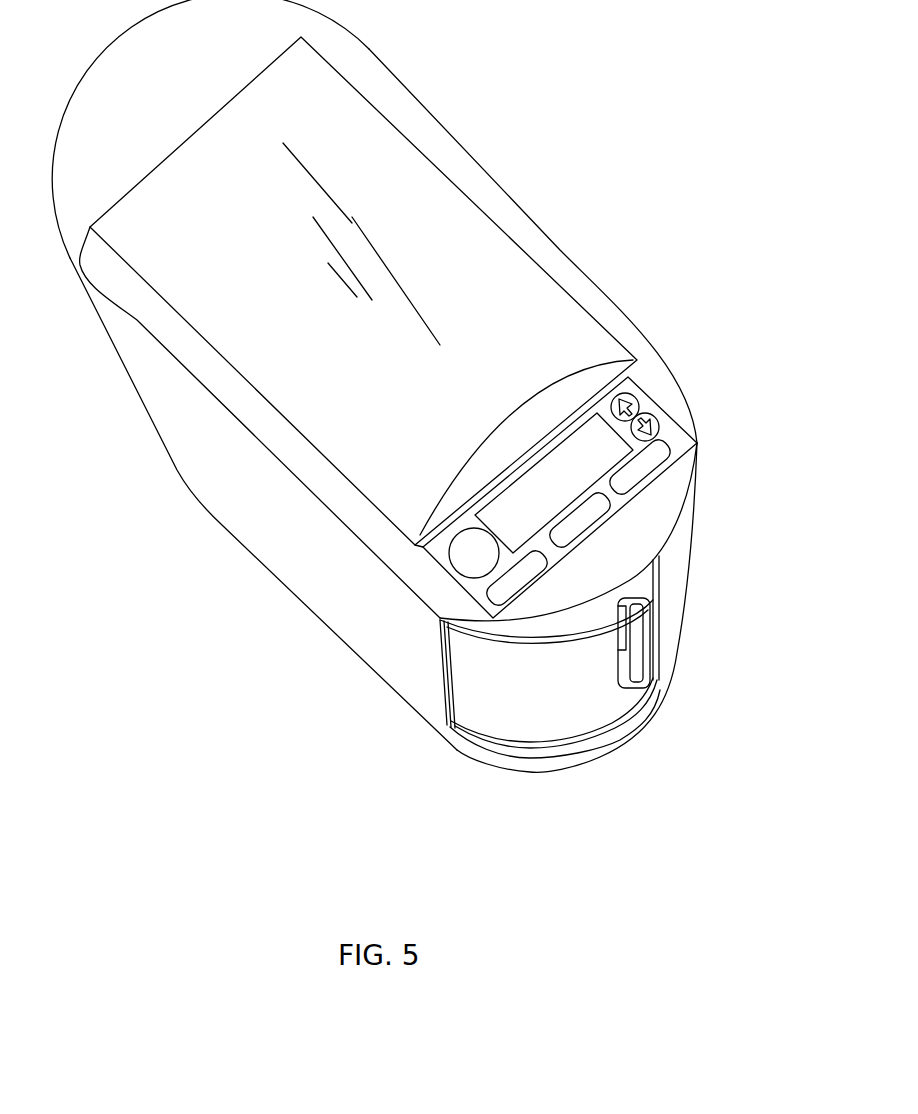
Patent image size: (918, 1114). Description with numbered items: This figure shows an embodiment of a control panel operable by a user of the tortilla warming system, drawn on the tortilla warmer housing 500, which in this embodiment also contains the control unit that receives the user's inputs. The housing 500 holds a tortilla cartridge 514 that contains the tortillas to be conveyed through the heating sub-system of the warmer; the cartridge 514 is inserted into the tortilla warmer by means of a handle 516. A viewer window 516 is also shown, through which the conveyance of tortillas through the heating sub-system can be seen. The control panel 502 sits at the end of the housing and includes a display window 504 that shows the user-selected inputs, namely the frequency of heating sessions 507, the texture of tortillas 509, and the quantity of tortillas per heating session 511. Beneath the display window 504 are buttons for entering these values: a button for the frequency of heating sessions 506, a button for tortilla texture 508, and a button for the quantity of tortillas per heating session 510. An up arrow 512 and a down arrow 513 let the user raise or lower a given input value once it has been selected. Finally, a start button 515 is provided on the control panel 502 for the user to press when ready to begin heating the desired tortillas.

The tortilla warmer housing 500 is at (539, 125).
The control panel 502 is at (674, 484).
The display window 504 is at (563, 440).
The frequency of heating sessions button 506 is at (547, 562).
The frequency of heating sessions 507 is at (493, 513).
The tortilla texture button 508 is at (600, 527).
The texture of tortillas 509 is at (527, 478).
The quantity of tortillas per heating session button 510 is at (652, 480).
The quantity of tortillas per heating session 511 is at (589, 429).
The up arrow 512 is at (638, 400).
The down arrow 513 is at (662, 415).
The tortilla cartridge 514 is at (545, 705).
The start button 515 is at (466, 576).
The handle / viewer window 516 is at (643, 643).